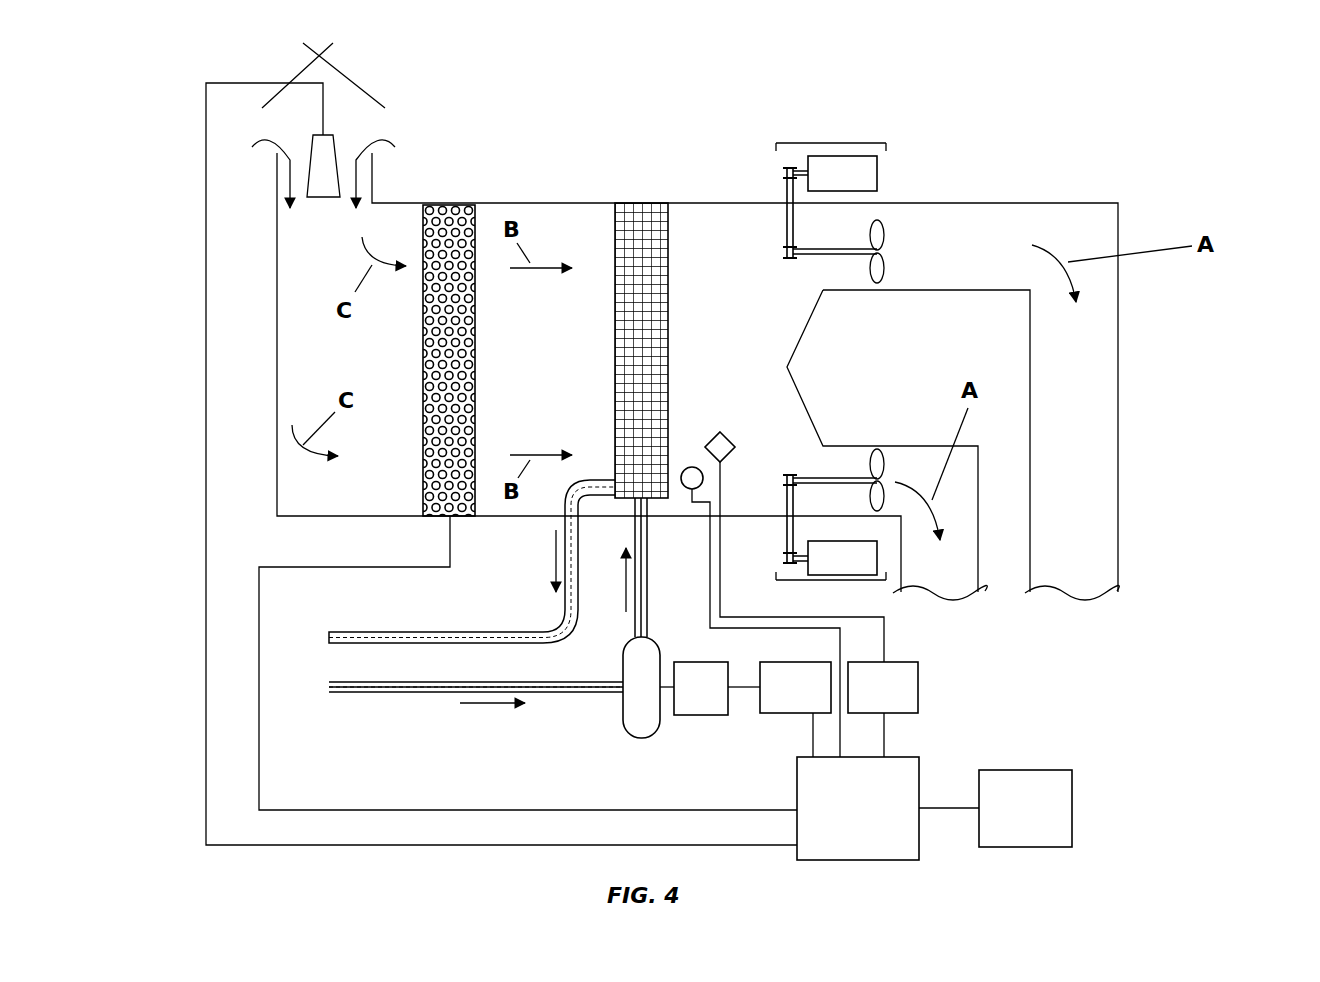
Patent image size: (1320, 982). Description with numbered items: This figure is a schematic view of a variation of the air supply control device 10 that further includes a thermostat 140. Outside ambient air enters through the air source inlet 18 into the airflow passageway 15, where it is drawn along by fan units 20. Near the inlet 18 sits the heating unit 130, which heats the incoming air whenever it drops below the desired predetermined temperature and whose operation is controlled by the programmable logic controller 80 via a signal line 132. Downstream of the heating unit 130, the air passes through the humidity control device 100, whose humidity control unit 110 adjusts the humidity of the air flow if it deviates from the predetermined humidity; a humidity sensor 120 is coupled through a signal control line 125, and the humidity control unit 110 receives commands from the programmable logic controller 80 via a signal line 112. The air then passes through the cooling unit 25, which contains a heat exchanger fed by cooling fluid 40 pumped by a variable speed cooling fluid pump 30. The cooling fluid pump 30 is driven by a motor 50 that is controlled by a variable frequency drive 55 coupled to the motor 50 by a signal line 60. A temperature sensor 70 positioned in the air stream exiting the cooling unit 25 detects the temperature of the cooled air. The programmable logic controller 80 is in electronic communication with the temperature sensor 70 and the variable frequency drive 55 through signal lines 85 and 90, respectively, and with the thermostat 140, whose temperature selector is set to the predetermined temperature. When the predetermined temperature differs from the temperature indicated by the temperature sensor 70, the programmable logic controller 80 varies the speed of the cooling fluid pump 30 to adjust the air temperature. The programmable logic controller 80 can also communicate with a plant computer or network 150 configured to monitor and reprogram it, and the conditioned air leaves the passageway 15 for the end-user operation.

The air supply control device 10 is at (1222, 150).
The airflow passageway 15 is at (276, 368).
The air source inlet 18 is at (305, 65).
The fan unit 20 is at (831, 143).
The cooling unit 25 is at (643, 192).
The cooling fluid pump 30 is at (622, 655).
The cooling fluid 40 is at (465, 632).
The motor 50 is at (717, 688).
The variable frequency drive 55 is at (795, 687).
The signal line 60 is at (745, 687).
The temperature sensor 70 is at (732, 440).
The programmable logic controller 80 is at (888, 808).
The signal line 85 is at (885, 630).
The signal line 90 is at (812, 742).
The humidity control device 100 is at (457, 192).
The humidity control unit 110 is at (475, 340).
The signal line 112 is at (375, 567).
The humidity sensor 120 is at (694, 466).
The signal control line 125 is at (708, 583).
The heating unit 130 is at (335, 148).
The signal line 132 is at (205, 453).
The thermostat 140 is at (883, 687).
The network 150 is at (1025, 808).